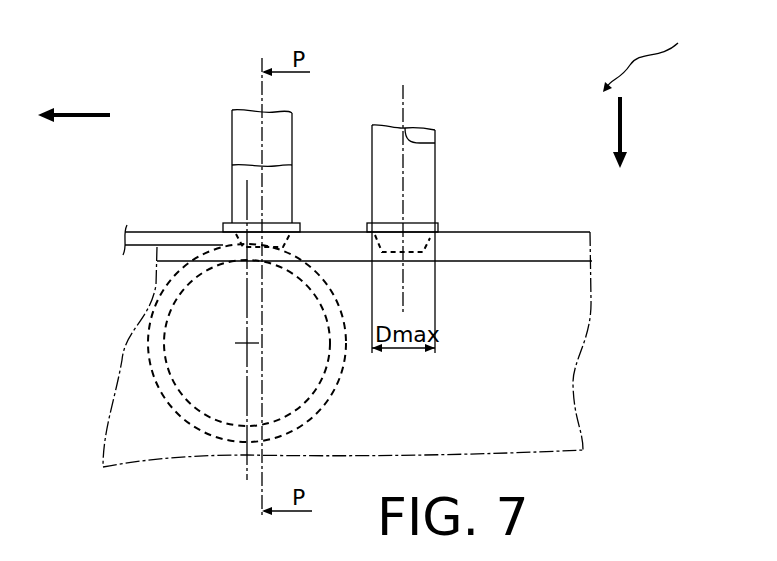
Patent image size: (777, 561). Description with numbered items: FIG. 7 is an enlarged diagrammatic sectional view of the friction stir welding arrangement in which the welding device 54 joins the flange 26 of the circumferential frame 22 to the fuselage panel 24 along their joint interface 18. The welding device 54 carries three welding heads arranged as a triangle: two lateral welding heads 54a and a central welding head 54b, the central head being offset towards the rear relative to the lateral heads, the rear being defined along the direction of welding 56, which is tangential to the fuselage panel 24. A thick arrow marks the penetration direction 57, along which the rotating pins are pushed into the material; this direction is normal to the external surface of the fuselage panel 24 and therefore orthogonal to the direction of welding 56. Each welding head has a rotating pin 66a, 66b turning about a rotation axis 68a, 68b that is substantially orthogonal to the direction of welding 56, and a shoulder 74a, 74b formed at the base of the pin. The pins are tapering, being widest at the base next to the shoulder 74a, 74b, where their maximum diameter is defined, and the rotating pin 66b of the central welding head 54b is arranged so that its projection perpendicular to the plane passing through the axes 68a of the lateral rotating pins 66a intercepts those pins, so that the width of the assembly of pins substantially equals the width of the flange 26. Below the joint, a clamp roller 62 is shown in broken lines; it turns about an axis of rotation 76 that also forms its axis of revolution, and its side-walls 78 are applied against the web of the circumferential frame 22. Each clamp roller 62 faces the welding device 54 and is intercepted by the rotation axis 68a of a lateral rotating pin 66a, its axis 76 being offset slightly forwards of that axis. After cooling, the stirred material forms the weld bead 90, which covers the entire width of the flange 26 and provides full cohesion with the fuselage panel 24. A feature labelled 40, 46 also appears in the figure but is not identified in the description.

The direction of welding 56 is at (68, 113).
The penetration direction 57 is at (622, 125).
The pressing member 40 is at (674, 55).
The pressing portion 46 is at (674, 55).
The welding device 54 is at (422, 12).
The lateral welding heads 54a is at (296, 154).
The central welding head 54b is at (442, 202).
The rotation axis 68a is at (262, 88).
The rotation axis 68b is at (437, 133).
The shoulder 74a is at (292, 236).
The shoulder 74b is at (437, 238).
The rotating pin 66a is at (288, 238).
The rotating pin 66b is at (432, 242).
The flange 26 is at (341, 196).
The circumferential frame 22 is at (341, 196).
The fuselage panel 24 is at (143, 232).
The joint interface 18 is at (212, 243).
The weld bead 90 is at (563, 245).
The clamp roller 62 is at (152, 383).
The side-walls 78 is at (197, 417).
The axis of rotation 76 is at (247, 343).